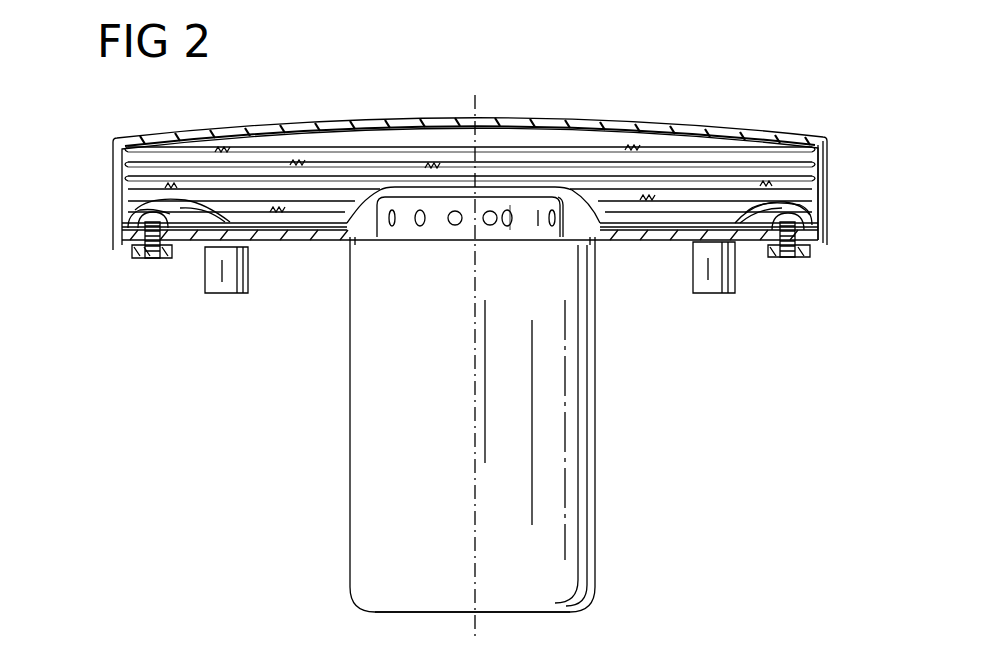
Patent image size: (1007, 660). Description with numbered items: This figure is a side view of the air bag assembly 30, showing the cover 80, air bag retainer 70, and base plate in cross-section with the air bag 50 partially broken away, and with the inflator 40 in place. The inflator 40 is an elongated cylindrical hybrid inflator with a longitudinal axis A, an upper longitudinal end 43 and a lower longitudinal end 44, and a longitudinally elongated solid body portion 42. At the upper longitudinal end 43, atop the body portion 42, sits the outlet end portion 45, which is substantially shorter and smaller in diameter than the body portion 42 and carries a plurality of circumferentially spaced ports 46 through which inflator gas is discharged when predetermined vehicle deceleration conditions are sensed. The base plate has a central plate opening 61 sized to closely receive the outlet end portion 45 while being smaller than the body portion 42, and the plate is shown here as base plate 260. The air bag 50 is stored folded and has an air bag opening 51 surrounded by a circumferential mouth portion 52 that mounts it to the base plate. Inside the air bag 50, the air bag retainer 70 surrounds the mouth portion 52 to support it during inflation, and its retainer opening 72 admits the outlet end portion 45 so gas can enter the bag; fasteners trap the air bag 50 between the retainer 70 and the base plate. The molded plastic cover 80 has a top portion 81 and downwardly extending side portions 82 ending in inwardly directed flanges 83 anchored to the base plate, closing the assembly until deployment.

The air bag assembly 30 is at (473, 187).
The inflator 40 is at (525, 431).
The body portion 42 is at (572, 497).
The upper longitudinal end 43 is at (596, 250).
The lower longitudinal end 44 is at (572, 604).
The outlet end portion 45 is at (507, 210).
The ports 46 is at (455, 211).
The air bag 50 is at (509, 139).
The air bag opening 51 is at (765, 213).
The mouth portion 52 is at (798, 230).
The central plate opening 61 is at (380, 243).
The air bag retainer 70 is at (137, 228).
The retainer opening 72 is at (200, 223).
The cover 80 is at (470, 87).
The top portion 81 is at (590, 121).
The side portions 82 is at (826, 172).
The flanges 83 is at (130, 251).
The base plate 260 is at (290, 243).
The longitudinal axis A is at (486, 95).